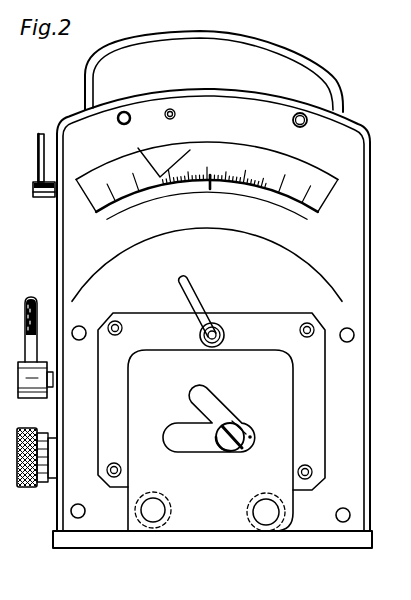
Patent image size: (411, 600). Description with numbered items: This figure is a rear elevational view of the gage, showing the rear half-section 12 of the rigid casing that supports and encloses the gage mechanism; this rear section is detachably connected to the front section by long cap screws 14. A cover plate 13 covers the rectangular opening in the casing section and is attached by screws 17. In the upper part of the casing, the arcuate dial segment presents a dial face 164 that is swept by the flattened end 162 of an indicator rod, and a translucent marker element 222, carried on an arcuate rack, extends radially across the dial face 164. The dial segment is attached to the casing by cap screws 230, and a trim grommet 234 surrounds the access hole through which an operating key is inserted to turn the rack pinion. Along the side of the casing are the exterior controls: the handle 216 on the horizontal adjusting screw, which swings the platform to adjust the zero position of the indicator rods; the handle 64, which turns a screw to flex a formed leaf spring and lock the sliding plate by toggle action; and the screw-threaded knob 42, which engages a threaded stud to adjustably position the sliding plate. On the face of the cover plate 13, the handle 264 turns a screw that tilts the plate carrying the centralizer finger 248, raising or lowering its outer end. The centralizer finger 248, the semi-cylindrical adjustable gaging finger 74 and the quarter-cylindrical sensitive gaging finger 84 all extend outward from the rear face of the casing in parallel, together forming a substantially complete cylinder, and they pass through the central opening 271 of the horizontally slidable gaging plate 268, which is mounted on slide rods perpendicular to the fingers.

The rear half-section 12 is at (355, 400).
The cover plate 13 is at (291, 302).
The cap screw 14 is at (346, 510).
The screw 17 is at (315, 331).
The screw-threaded knob 42 is at (20, 484).
The handle 64 is at (36, 300).
The adjustable gaging finger 74 is at (222, 453).
The sensitive gaging finger 84 is at (250, 437).
The flattened end 162 is at (208, 183).
The dial face 164 is at (250, 164).
The handle 216 is at (37, 136).
The translucent marker element 222 is at (147, 157).
The cap screw 230 is at (301, 128).
The trim grommet 234 is at (177, 113).
The centralizer finger 248 is at (233, 420).
The handle 264 is at (197, 297).
The gaging plate 268 is at (270, 343).
The central opening 271 is at (219, 400).